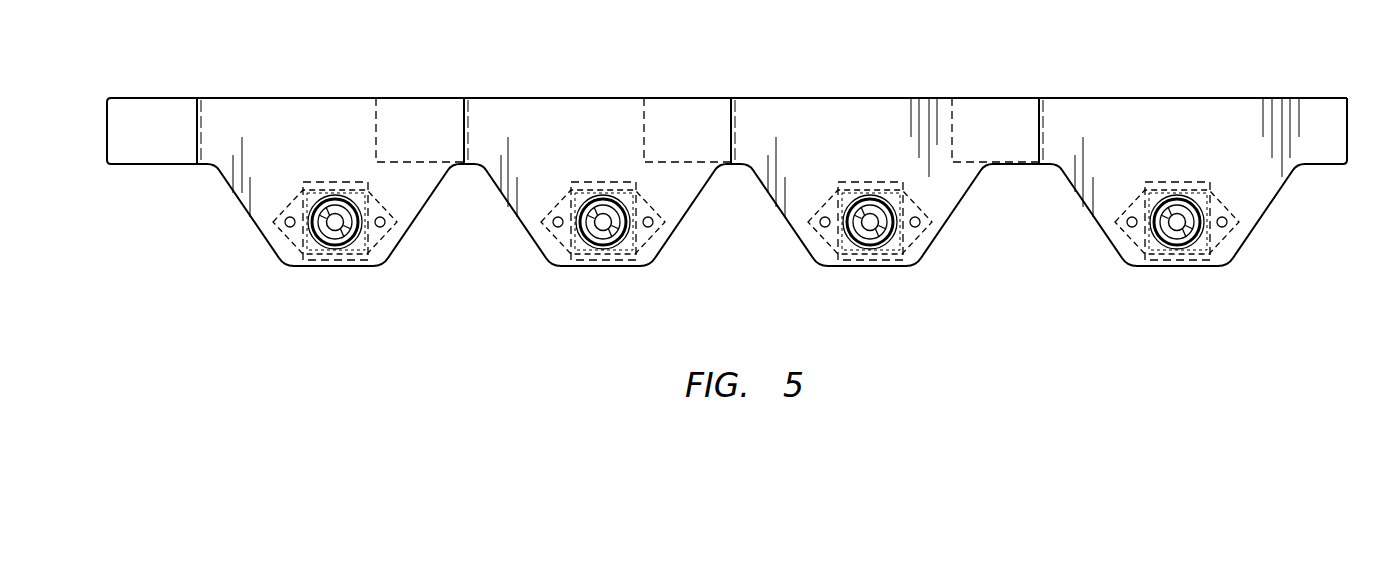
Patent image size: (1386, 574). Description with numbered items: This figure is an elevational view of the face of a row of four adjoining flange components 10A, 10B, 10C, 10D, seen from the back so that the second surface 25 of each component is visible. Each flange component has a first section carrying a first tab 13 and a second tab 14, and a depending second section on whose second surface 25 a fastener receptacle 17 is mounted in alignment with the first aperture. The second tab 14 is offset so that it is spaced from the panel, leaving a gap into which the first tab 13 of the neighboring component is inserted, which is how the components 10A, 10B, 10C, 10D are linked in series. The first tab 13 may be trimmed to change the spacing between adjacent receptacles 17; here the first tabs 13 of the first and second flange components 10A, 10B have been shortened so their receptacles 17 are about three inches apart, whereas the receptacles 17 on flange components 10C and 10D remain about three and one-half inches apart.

The first flange component 10A is at (302, 74).
The second flange component 10B is at (570, 74).
The third flange component 10C is at (865, 74).
The fourth flange component 10D is at (1184, 72).
The first tab 13 is at (458, 148).
The second tab 14 is at (150, 145).
The receptacle 17 is at (335, 237).
The second surface 25 is at (318, 142).